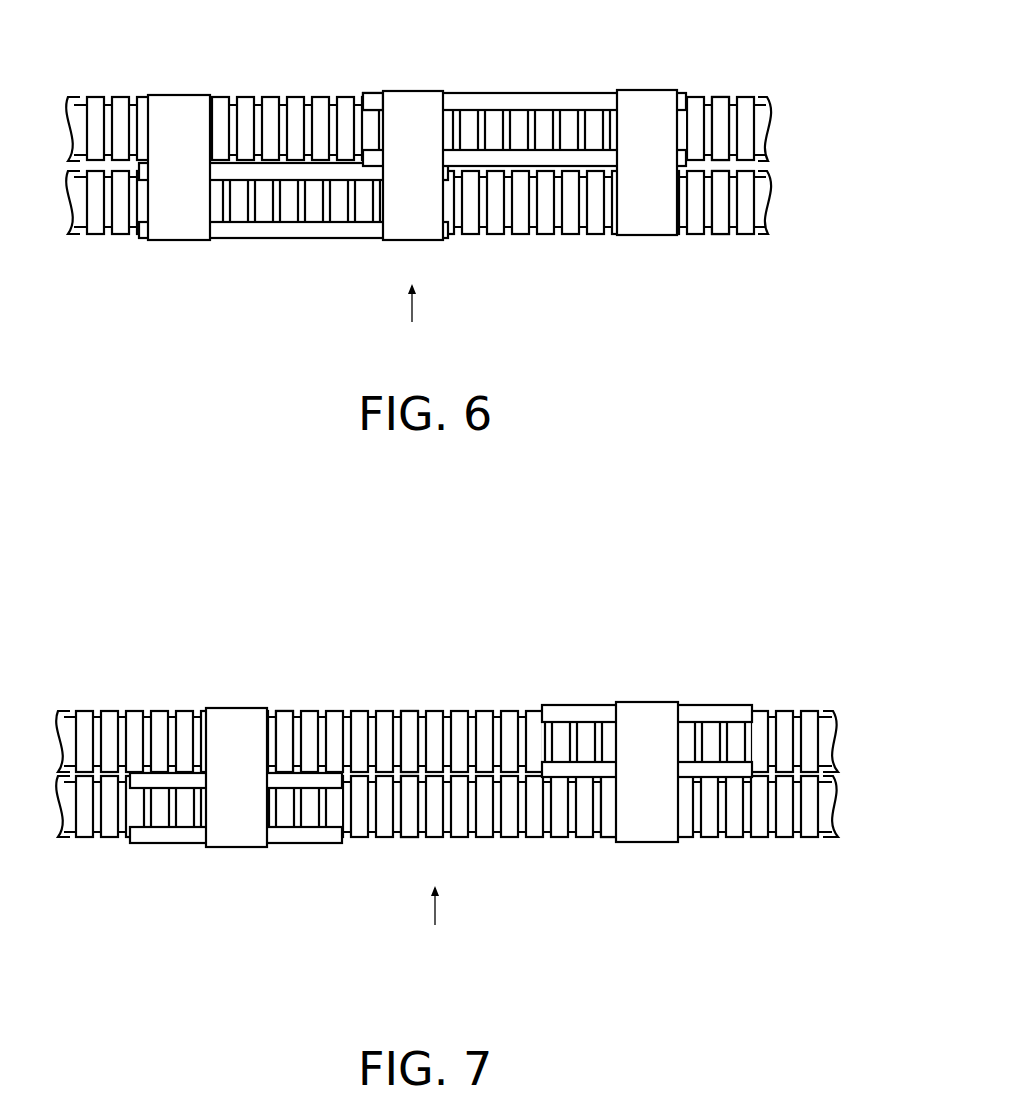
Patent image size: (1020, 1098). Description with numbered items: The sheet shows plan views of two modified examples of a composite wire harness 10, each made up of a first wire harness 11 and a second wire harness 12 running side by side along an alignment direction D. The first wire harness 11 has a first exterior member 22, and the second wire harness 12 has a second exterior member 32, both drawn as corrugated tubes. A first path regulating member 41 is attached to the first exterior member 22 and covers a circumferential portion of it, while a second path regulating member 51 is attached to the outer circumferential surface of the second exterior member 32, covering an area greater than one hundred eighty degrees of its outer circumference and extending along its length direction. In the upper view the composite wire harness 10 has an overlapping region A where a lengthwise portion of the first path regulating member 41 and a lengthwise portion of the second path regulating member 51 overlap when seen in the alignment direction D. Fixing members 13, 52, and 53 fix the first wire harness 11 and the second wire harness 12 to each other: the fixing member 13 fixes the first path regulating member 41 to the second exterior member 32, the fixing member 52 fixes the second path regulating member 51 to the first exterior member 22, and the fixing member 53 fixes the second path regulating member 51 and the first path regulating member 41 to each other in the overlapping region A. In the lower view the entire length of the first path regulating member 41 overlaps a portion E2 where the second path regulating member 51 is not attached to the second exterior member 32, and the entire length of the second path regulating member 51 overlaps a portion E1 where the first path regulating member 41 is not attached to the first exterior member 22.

In FIG. 6, the composite wire harness 10 is at (418, 178).
In FIG. 7, the composite wire harness 10 is at (447, 781).
In FIG. 6, the first wire harness 11 is at (418, 228).
In FIG. 7, the first wire harness 11 is at (447, 833).
In FIG. 6, the second wire harness 12 is at (418, 104).
In FIG. 7, the second wire harness 12 is at (447, 717).
In FIG. 6, the fixing member 13 is at (180, 96).
In FIG. 7, the fixing member 13 is at (233, 716).
In FIG. 6, the first exterior member 22 is at (720, 234).
In FIG. 7, the first exterior member 22 is at (410, 834).
In FIG. 6, the second exterior member 32 is at (720, 97).
In FIG. 7, the second exterior member 32 is at (410, 711).
In FIG. 6, the first path regulating member 41 is at (293, 233).
In FIG. 7, the first path regulating member 41 is at (236, 836).
In FIG. 6, the second path regulating member 51 is at (501, 99).
In FIG. 7, the second path regulating member 51 is at (642, 715).
In FIG. 6, the fixing member 52 is at (645, 235).
In FIG. 7, the fixing member 52 is at (648, 833).
In FIG. 6, the fixing member 53 is at (427, 235).
In FIG. 6, the overlapping region A is at (371, 90).
In FIG. 6, the alignment direction D is at (414, 320).
In FIG. 7, the alignment direction D is at (436, 923).
In FIG. 7, the portion where the first path regulating member is not attached E1 is at (610, 839).
In FIG. 7, the portion where the second path regulating member is not attached E2 is at (283, 711).